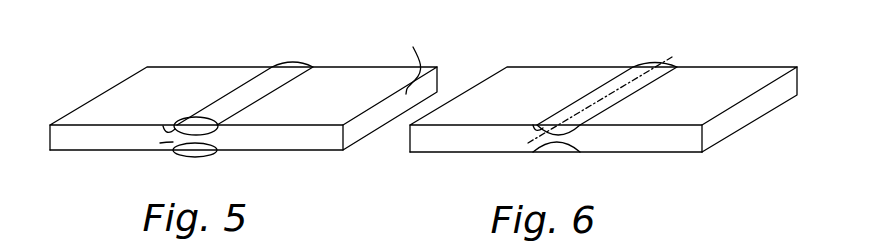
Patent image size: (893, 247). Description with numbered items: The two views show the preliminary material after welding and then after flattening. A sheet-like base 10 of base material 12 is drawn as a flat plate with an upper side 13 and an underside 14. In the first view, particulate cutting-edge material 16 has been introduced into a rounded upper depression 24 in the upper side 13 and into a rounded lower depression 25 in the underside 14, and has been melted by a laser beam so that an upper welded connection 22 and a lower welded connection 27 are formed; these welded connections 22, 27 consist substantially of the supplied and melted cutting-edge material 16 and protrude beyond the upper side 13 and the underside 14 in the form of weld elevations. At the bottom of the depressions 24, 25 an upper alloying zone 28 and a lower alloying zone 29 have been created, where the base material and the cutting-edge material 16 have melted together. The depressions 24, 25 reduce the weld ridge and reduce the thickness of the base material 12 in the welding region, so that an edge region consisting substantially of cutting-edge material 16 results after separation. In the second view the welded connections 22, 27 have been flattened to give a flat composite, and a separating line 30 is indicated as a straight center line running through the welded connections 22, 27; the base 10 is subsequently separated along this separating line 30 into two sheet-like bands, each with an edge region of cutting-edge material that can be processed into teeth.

In FIG. 5, the sheet-like base 10 is at (243, 103).
In FIG. 6, the sheet-like base 10 is at (598, 112).
In FIG. 6, the base material 12 is at (733, 119).
In FIG. 5, the upper side 13 is at (137, 91).
In FIG. 6, the upper side 13 is at (519, 74).
In FIG. 5, the underside 14 is at (98, 163).
In FIG. 6, the underside 14 is at (447, 174).
In FIG. 5, the cutting-edge material 16 is at (207, 125).
In FIG. 5, the upper welded connection 22 is at (277, 72).
In FIG. 6, the upper welded connection 22 is at (628, 72).
In FIG. 5, the upper depression 24 is at (165, 125).
In FIG. 5, the lower depression 25 is at (160, 143).
In FIG. 5, the lower welded connection 27 is at (201, 152).
In FIG. 6, the lower welded connection 27 is at (563, 155).
In FIG. 5, the upper alloying zone 28 is at (197, 127).
In FIG. 6, the upper alloying zone 28 is at (537, 125).
In FIG. 5, the lower alloying zone 29 is at (205, 143).
In FIG. 6, the lower alloying zone 29 is at (543, 153).
In FIG. 6, the separating line 30 is at (600, 98).